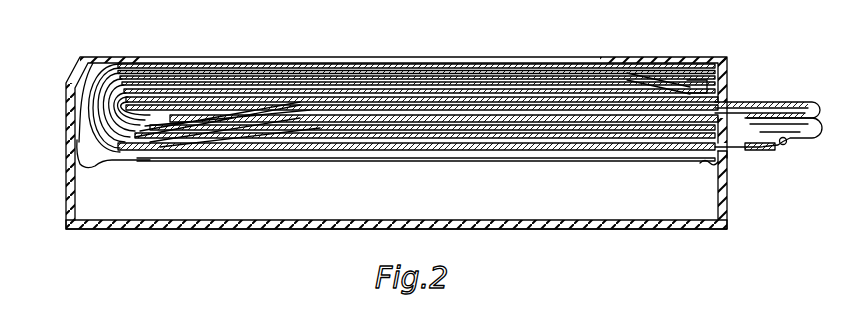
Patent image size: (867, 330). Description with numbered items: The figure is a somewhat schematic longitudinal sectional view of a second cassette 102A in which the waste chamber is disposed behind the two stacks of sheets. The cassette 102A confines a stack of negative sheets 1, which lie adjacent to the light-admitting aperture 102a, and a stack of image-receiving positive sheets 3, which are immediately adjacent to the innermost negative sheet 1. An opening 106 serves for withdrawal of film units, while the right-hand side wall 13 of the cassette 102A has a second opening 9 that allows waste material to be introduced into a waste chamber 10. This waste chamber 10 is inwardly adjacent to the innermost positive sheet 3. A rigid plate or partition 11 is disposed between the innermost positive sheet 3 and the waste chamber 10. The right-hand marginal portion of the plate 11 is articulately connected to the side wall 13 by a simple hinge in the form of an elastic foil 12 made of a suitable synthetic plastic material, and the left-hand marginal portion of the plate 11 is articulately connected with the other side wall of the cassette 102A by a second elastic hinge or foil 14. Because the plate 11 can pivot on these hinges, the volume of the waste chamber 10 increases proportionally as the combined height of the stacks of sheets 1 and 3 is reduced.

The negative sheets 1 is at (404, 109).
The image-receiving positive sheets 3 is at (625, 150).
The second opening 9 is at (728, 199).
The waste chamber 10 is at (536, 229).
The rigid plate or partition 11 is at (454, 161).
The elastic foil 12 is at (712, 164).
The right-hand side wall 13 is at (727, 158).
The second elastic hinge or foil 14 is at (110, 163).
The cassette 102A is at (93, 66).
The light-admitting aperture 102a is at (381, 63).
The opening 106 is at (737, 108).